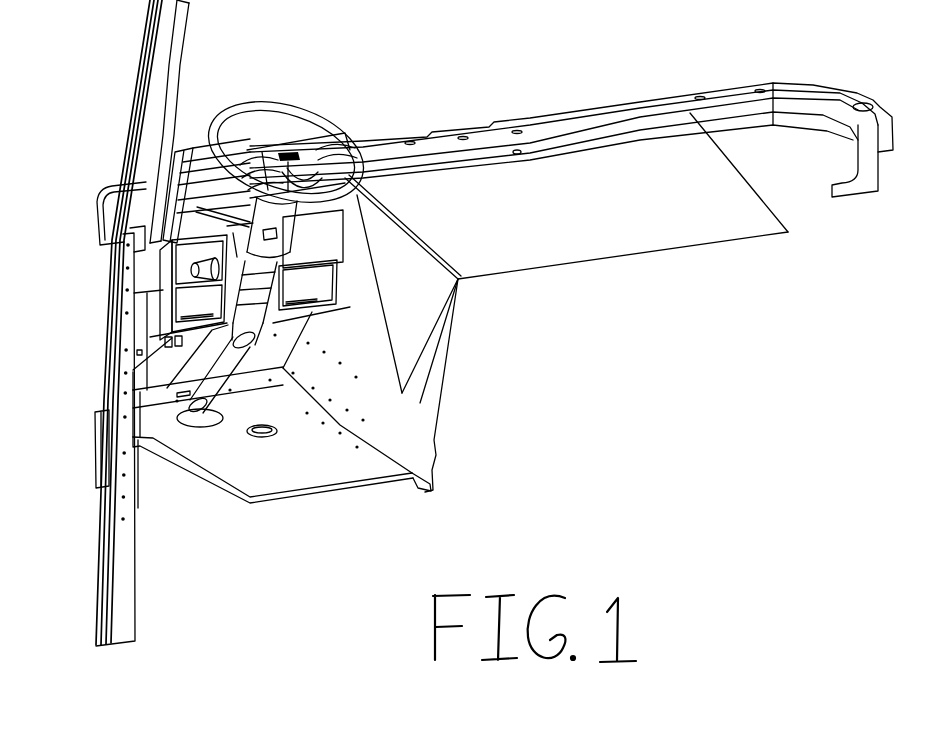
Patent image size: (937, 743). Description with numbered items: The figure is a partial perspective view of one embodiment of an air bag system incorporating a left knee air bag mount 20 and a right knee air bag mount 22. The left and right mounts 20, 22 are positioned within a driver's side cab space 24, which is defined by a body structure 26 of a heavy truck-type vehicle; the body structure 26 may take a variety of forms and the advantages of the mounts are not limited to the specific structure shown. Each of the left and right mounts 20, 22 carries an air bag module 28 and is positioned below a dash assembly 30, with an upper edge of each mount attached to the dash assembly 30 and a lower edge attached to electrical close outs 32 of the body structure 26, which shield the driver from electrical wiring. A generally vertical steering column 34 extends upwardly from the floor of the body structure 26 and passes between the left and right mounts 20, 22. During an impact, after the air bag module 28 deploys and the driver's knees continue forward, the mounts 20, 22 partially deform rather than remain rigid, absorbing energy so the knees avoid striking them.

The left knee air bag mount 20 is at (163, 314).
The right knee air bag mount 22 is at (342, 291).
The driver's side cab space 24 is at (392, 408).
The body structure 26 is at (430, 183).
The air bag module 28 is at (310, 290).
The dash assembly 30 is at (195, 147).
The electrical close outs 32 is at (163, 380).
The steering column 34 is at (205, 386).